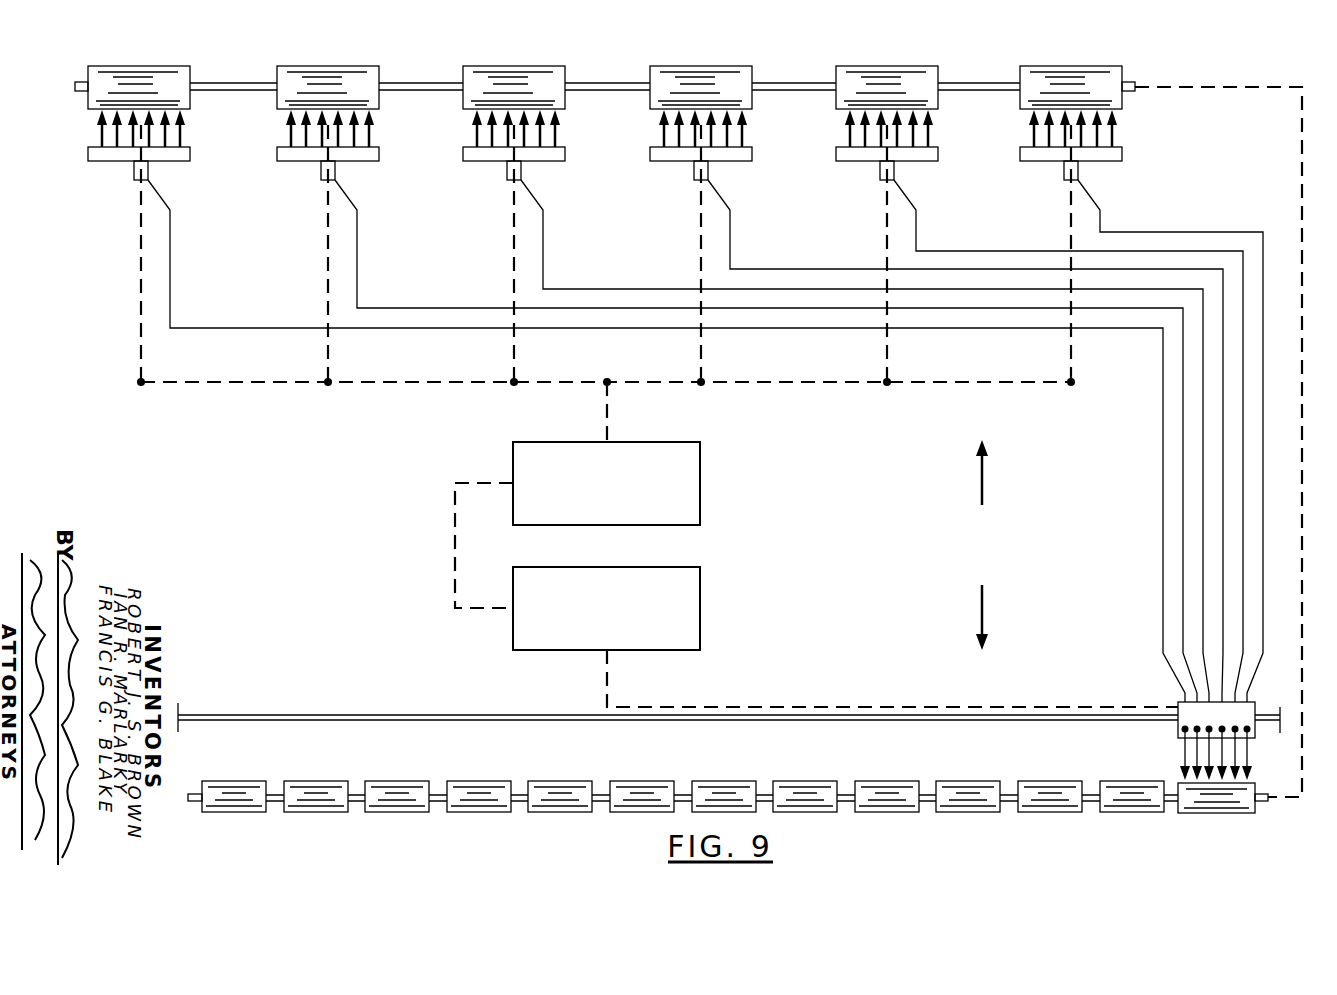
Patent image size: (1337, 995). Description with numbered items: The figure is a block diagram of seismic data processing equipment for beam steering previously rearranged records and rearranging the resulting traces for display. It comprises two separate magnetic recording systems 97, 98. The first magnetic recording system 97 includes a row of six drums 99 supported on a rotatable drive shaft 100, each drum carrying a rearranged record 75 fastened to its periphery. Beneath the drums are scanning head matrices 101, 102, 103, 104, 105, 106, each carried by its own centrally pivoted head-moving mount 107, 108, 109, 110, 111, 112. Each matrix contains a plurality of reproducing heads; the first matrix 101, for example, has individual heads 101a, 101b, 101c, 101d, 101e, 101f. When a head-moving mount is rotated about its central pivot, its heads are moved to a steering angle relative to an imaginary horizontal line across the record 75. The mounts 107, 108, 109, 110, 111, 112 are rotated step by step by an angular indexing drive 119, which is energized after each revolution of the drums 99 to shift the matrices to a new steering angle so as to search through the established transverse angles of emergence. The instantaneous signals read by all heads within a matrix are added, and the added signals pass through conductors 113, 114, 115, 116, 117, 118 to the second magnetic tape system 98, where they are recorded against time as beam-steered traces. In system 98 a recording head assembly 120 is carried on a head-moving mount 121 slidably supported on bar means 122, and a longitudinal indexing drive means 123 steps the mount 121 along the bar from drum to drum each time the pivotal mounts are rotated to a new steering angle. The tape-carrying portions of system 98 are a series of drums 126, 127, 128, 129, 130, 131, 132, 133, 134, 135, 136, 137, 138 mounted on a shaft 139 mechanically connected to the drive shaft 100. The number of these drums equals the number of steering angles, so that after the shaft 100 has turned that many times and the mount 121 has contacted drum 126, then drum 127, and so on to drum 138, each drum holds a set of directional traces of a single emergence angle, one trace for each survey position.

The rearranged record 75 is at (95, 72).
The drum 99 is at (183, 72).
The drive shaft 100 is at (78, 80).
The scanning head matrix 101 is at (134, 146).
The reproducing head 101a is at (98, 122).
The reproducing head 101b is at (115, 125).
The reproducing head 101c is at (133, 137).
The reproducing head 101d is at (150, 127).
The reproducing head 101e is at (167, 127).
The reproducing head 101f is at (182, 117).
The scanning head matrix 102 is at (270, 112).
The scanning head matrix 103 is at (456, 113).
The scanning head matrix 104 is at (643, 113).
The scanning head matrix 105 is at (829, 113).
The scanning head matrix 106 is at (1014, 113).
The head-moving mount 107 is at (192, 160).
The head-moving mount 108 is at (379, 160).
The head-moving mount 109 is at (565, 160).
The head-moving mount 110 is at (752, 160).
The head-moving mount 111 is at (938, 160).
The head-moving mount 112 is at (1122, 162).
The conductor 113 is at (237, 327).
The conductor 114 is at (428, 307).
The conductor 115 is at (612, 287).
The conductor 116 is at (822, 268).
The conductor 117 is at (998, 250).
The conductor 118 is at (1213, 231).
The angular indexing drive 119 is at (702, 483).
The longitudinal indexing drive means 123 is at (702, 610).
The magnetic recording system 97 is at (982, 486).
The magnetic tape system 98 is at (981, 606).
The recording head assembly 120 is at (1168, 761).
The head-moving mount 121 is at (1255, 738).
The bar means 122 is at (392, 714).
The drum 126 is at (1217, 813).
The drum 127 is at (1118, 780).
The drum 128 is at (1036, 780).
The drum 129 is at (954, 780).
The drum 130 is at (873, 780).
The drum 131 is at (791, 780).
The drum 132 is at (710, 780).
The drum 133 is at (628, 780).
The drum 134 is at (546, 780).
The drum 135 is at (465, 780).
The drum 136 is at (383, 780).
The drum 137 is at (302, 780).
The drum 138 is at (220, 780).
The shaft 139 is at (192, 801).